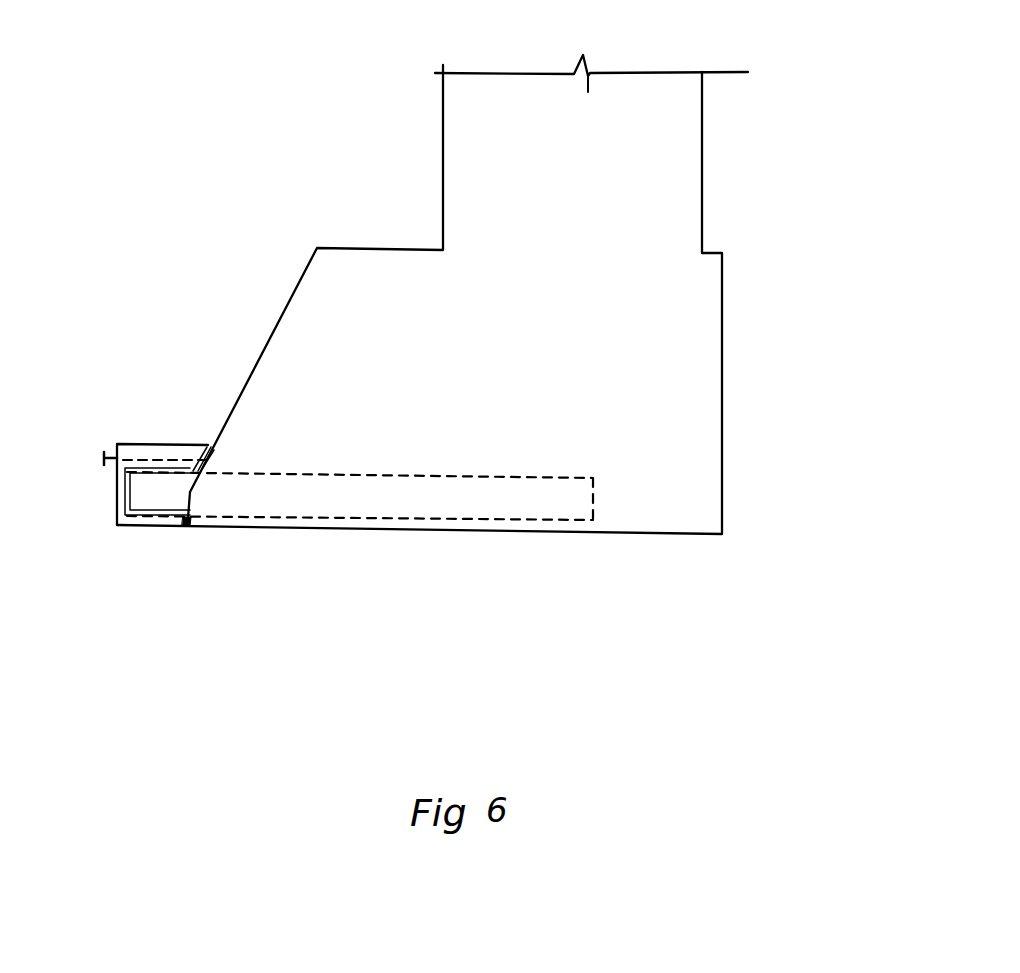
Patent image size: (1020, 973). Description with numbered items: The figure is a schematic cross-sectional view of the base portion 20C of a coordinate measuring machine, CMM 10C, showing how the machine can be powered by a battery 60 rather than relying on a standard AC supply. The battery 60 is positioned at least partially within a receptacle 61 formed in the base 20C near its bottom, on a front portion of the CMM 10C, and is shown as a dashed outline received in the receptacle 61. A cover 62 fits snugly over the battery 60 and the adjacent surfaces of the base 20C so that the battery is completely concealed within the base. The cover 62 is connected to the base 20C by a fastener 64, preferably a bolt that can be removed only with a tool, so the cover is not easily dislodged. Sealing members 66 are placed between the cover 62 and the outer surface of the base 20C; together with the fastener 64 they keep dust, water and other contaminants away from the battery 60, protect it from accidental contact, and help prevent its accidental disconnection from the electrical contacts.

The CMM 10C is at (794, 142).
The base portion 20C is at (722, 395).
The battery 60 is at (347, 518).
The receptacle 61 is at (480, 525).
The cover 62 is at (160, 452).
The fastener 64 is at (104, 463).
The sealing member 66 is at (201, 454).